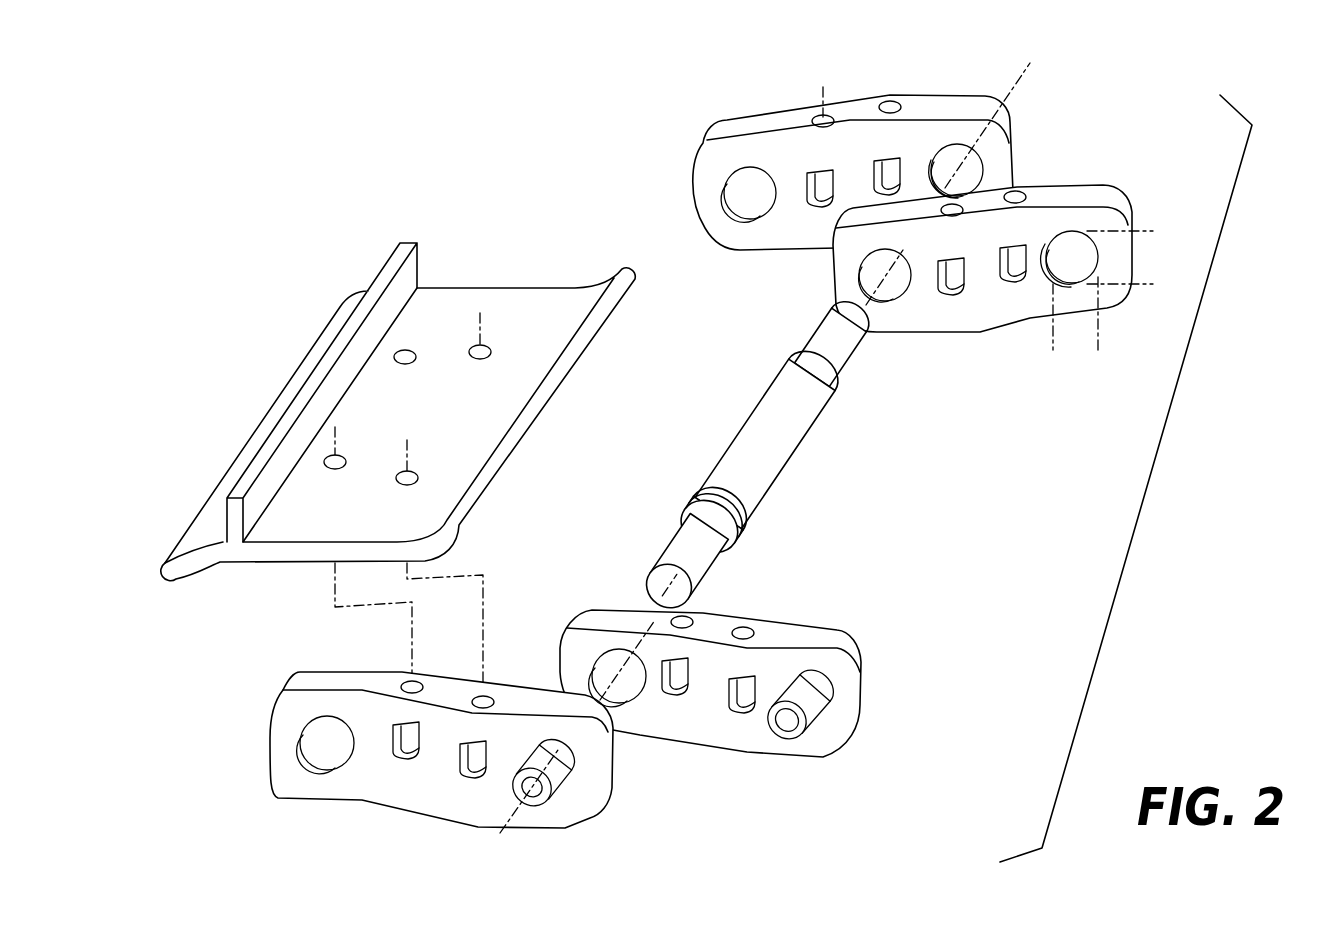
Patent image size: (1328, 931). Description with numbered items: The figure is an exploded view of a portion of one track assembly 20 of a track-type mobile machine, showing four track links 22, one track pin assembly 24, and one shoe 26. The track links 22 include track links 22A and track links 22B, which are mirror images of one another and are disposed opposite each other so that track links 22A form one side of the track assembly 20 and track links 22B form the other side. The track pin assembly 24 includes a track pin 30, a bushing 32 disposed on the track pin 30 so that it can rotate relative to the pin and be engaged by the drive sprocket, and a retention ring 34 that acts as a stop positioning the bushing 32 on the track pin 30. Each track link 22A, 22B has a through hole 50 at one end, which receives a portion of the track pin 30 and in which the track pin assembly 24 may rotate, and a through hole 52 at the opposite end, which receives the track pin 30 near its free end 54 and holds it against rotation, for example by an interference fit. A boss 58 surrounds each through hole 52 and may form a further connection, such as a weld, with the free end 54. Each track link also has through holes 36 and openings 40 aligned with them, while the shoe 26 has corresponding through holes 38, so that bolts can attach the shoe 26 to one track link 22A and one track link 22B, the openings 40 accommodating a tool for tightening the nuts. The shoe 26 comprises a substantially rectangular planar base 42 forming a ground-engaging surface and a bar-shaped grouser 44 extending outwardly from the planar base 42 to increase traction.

The track assembly 20 is at (1143, 493).
The track links 22 is at (722, 438).
The track link 22A is at (700, 137).
The track link 22B is at (790, 757).
The track pin assembly 24 is at (777, 459).
The shoe 26 is at (398, 438).
The track pin 30 is at (840, 352).
The bushing 32 is at (803, 418).
The retention ring 34 is at (743, 513).
The through holes 36 is at (823, 117).
The through holes 38 is at (480, 343).
The openings 40 is at (820, 167).
The planar base 42 is at (470, 417).
The grouser 44 is at (383, 307).
The through hole 50 is at (724, 185).
The through hole 52 is at (950, 150).
The free end 54 is at (883, 333).
The boss 58 is at (827, 698).